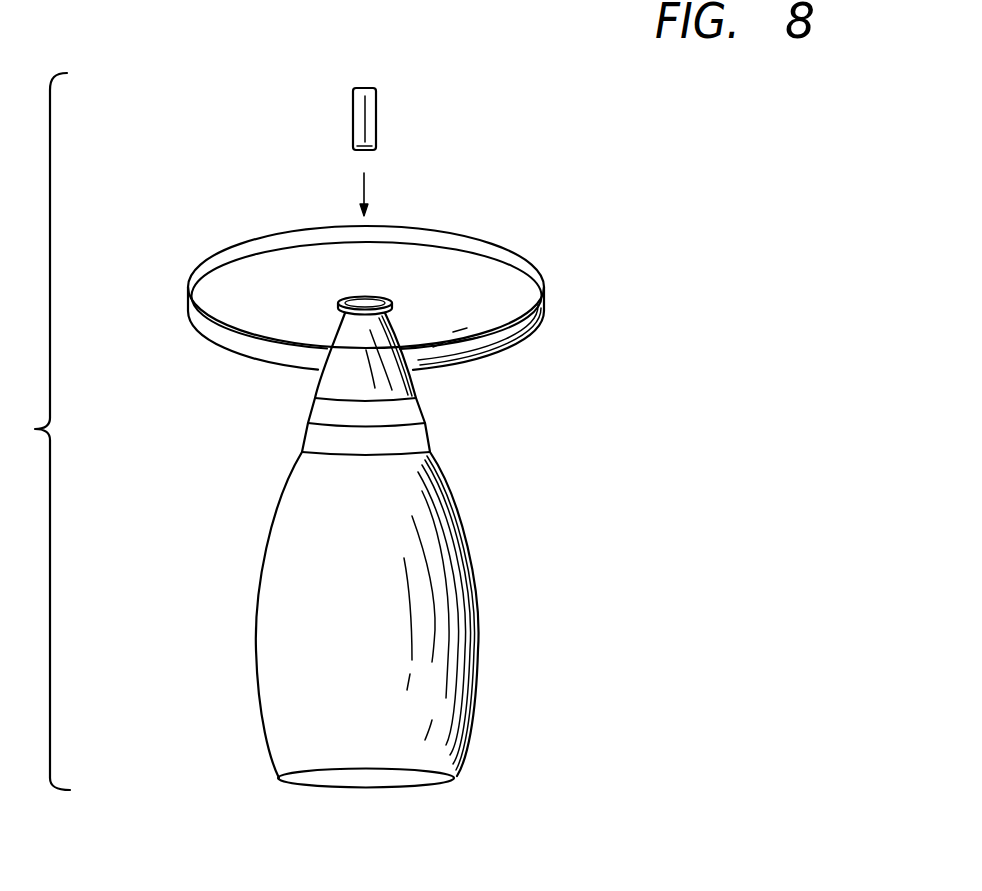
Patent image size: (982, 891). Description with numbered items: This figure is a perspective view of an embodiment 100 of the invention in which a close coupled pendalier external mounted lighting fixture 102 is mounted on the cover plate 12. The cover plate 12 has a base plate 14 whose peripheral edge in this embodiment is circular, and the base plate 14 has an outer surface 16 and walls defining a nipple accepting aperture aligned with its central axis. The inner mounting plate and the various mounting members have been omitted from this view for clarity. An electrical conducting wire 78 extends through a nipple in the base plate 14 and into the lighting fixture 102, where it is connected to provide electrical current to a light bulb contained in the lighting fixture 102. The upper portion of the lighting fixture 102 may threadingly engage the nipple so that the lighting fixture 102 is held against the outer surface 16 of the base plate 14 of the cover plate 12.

The embodiment 100 is at (588, 664).
The electrical conducting wire 78 is at (377, 122).
The cover plate 12 is at (528, 265).
The base plate 14 is at (522, 312).
The outer surface 16 is at (460, 349).
The close coupled pendalier external mounted lighting fixture 102 is at (501, 294).